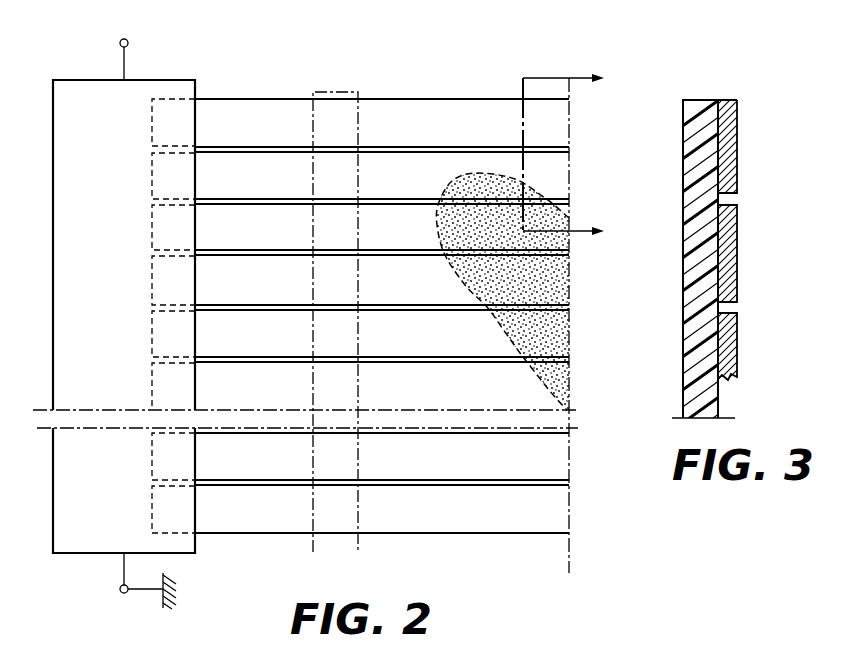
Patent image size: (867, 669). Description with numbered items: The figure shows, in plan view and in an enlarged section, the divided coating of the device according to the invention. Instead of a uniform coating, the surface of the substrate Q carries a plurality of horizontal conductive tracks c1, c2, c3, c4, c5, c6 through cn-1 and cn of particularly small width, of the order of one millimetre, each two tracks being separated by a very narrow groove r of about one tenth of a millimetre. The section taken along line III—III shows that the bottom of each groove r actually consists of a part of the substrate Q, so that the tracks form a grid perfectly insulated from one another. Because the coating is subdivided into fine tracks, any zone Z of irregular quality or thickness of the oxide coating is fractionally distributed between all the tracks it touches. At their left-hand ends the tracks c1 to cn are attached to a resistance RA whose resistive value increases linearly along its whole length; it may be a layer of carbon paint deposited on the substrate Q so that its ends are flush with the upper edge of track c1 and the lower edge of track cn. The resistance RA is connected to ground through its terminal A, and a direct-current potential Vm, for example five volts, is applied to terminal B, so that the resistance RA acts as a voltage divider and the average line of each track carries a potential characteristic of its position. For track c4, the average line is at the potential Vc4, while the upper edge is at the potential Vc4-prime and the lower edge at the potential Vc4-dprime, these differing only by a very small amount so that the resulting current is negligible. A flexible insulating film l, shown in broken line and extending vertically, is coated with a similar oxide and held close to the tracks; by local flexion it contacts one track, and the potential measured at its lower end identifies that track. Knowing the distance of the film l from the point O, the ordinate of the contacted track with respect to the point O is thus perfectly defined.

In FIG. 2, the resistance RA is at (63, 90).
In FIG. 2, the terminal B is at (116, 48).
In FIG. 2, the direct-current potential Vm is at (140, 37).
In FIG. 2, the terminal A is at (144, 585).
In FIG. 2, the point O is at (208, 556).
In FIG. 2, the film l is at (358, 548).
In FIG. 2, the section line III is at (612, 70).
In FIG. 2, the conductive track c1 is at (563, 112).
In FIG. 3, the conductive track c1 is at (740, 134).
In FIG. 2, the conductive track c2 is at (563, 172).
In FIG. 3, the conductive track c2 is at (740, 266).
In FIG. 2, the conductive track c3 is at (563, 248).
In FIG. 3, the conductive track c3 is at (740, 356).
In FIG. 2, the conductive track c4 is at (563, 292).
In FIG. 2, the conductive track c5 is at (563, 334).
In FIG. 2, the conductive track c6 is at (563, 382).
In FIG. 2, the conductive track cn-1 is at (563, 447).
In FIG. 2, the conductive track cn is at (563, 517).
In FIG. 2, the groove r is at (582, 150).
In FIG. 3, the groove r is at (750, 202).
In FIG. 2, the zone Z is at (552, 279).
In FIG. 2, the direct-current potential Vc4-prime is at (170, 248).
In FIG. 2, the direct-current potential Vc4 is at (140, 281).
In FIG. 2, the direct-current potential Vc4-dprime is at (168, 310).
In FIG. 3, the substrate Q is at (700, 100).